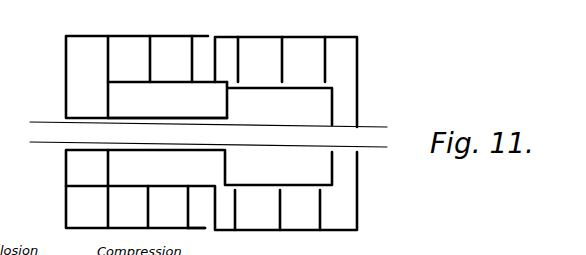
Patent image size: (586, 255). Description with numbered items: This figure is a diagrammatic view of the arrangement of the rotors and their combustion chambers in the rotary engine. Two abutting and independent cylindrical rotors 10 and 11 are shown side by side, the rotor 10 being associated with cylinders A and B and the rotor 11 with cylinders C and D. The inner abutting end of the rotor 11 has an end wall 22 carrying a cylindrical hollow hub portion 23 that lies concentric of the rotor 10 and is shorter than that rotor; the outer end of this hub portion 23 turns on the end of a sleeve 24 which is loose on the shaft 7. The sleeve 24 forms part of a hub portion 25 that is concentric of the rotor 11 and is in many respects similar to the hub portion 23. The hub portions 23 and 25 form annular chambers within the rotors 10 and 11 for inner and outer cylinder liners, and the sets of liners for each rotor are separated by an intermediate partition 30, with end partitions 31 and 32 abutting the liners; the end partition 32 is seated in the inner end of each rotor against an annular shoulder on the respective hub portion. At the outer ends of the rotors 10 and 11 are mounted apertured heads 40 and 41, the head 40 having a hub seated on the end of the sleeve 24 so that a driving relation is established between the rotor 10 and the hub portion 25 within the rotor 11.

The rotor 10 is at (92, 35).
The rotor 11 is at (333, 36).
The apertured head 40 is at (66, 98).
The apertured head 41 is at (358, 74).
The shaft 7 is at (383, 126).
The end wall 22 is at (213, 218).
The hub portion 23 is at (170, 83).
The sleeve 24 is at (132, 117).
The hub portion 25 is at (271, 89).
The intermediate partition 30 is at (147, 210).
The end partition 31 is at (102, 218).
The end partition 32 is at (246, 209).